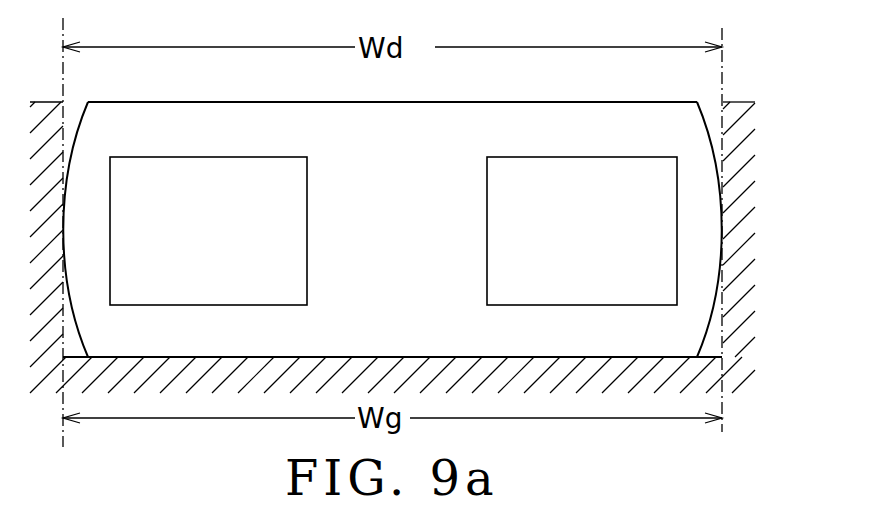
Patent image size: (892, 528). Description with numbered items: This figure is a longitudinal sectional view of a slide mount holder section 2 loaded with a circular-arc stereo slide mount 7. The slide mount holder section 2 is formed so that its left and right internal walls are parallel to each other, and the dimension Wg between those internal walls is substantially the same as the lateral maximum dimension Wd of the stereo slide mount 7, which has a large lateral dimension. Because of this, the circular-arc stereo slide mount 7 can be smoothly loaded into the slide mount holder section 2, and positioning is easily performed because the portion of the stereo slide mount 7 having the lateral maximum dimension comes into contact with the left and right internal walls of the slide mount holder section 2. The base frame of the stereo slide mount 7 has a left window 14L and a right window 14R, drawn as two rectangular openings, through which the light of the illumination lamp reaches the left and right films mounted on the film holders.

The slide mount holder section 2 is at (717, 145).
The stereo slide mount 7 is at (684, 328).
The left window 14L is at (183, 157).
The right window 14R is at (568, 157).